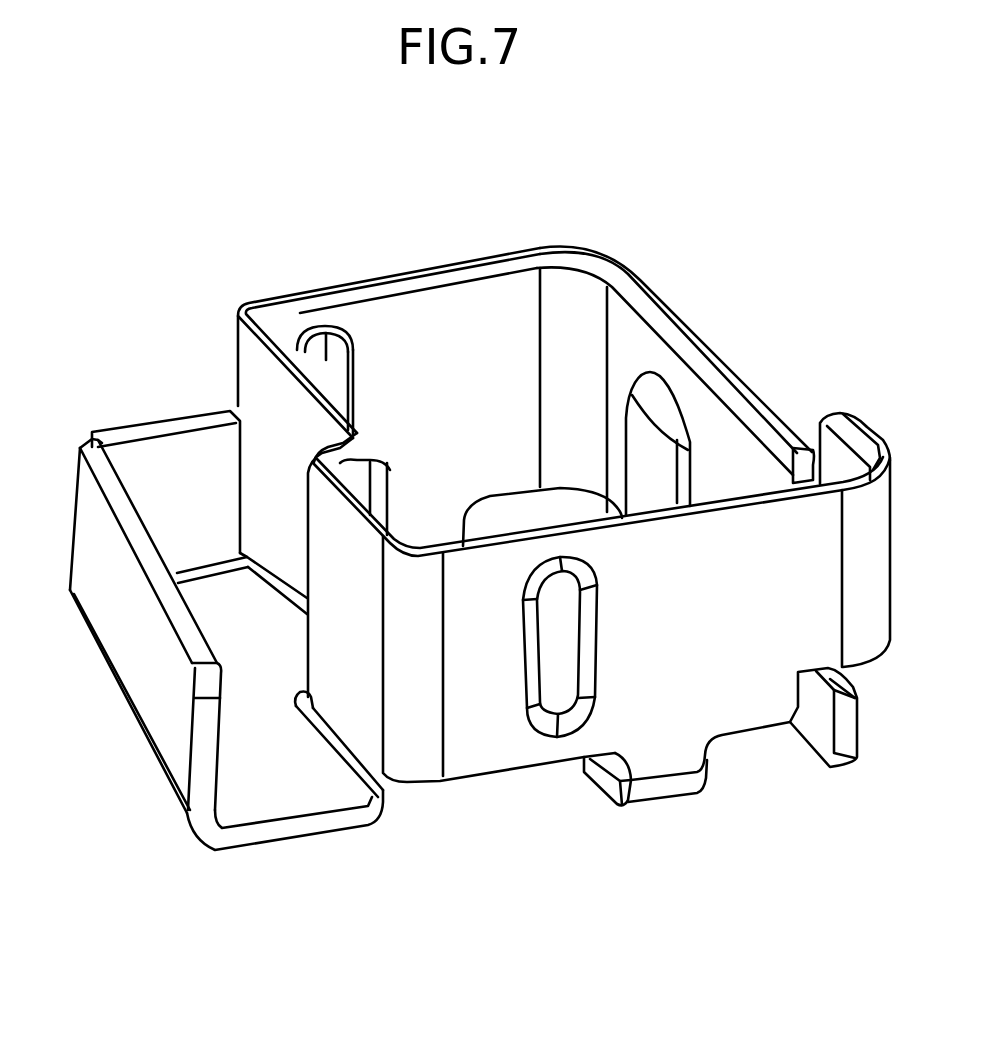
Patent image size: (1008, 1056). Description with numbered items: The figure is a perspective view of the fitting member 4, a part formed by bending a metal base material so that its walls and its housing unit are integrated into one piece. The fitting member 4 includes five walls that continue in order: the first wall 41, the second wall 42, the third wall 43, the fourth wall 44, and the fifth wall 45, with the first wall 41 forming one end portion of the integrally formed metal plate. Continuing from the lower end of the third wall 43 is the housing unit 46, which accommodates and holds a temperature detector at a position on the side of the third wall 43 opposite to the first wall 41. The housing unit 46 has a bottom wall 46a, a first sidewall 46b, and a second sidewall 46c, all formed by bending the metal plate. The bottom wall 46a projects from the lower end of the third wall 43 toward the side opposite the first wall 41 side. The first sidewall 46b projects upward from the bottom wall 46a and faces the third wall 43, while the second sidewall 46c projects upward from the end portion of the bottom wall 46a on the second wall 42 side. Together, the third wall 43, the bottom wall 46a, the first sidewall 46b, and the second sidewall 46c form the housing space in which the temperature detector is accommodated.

The fitting member 4 is at (564, 470).
The first wall 41 is at (730, 362).
The second wall 42 is at (380, 280).
The third wall 43 is at (292, 344).
The fourth wall 44 is at (570, 526).
The fifth wall 45 is at (858, 408).
The housing unit 46 is at (207, 545).
The bottom wall 46a is at (222, 609).
The first sidewall 46b is at (114, 481).
The second sidewall 46c is at (143, 417).